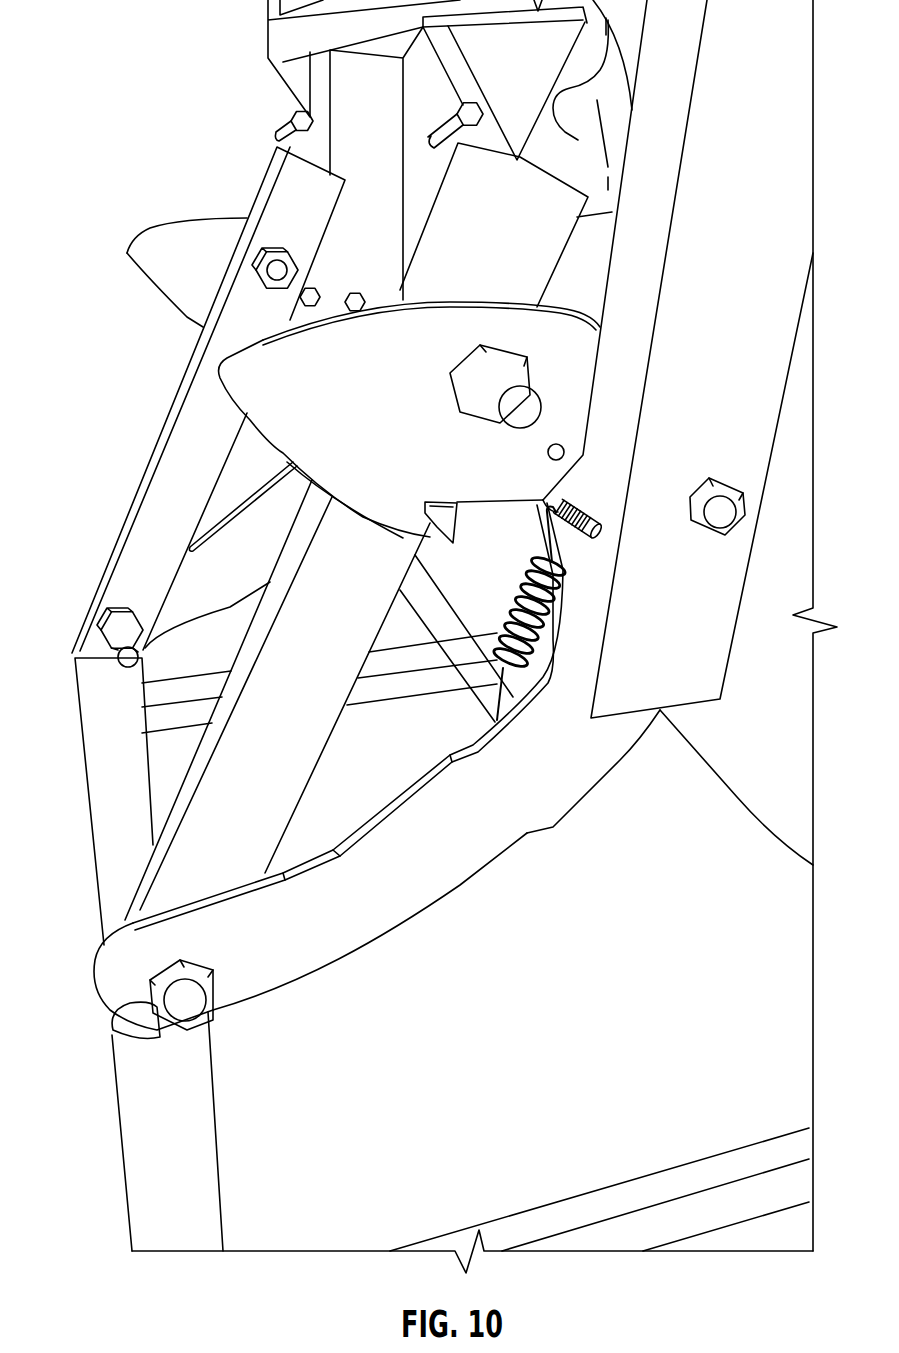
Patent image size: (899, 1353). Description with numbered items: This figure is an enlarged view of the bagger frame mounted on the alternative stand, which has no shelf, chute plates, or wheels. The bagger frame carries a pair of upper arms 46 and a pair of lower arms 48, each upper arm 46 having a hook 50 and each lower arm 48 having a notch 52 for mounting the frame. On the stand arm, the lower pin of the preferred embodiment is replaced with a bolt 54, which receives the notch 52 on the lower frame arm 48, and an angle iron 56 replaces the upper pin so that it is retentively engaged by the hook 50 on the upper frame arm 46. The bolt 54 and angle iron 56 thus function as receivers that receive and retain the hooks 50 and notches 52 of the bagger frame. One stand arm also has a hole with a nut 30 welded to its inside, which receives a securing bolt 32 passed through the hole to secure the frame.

The nut 30 is at (270, 254).
The securing bolt 32 is at (263, 272).
The upper arms 46 is at (158, 260).
The lower arms 48 is at (203, 593).
The hook 50 is at (427, 510).
The notch 52 is at (140, 1008).
The bolt 54 is at (123, 662).
The angle iron 56 is at (443, 502).